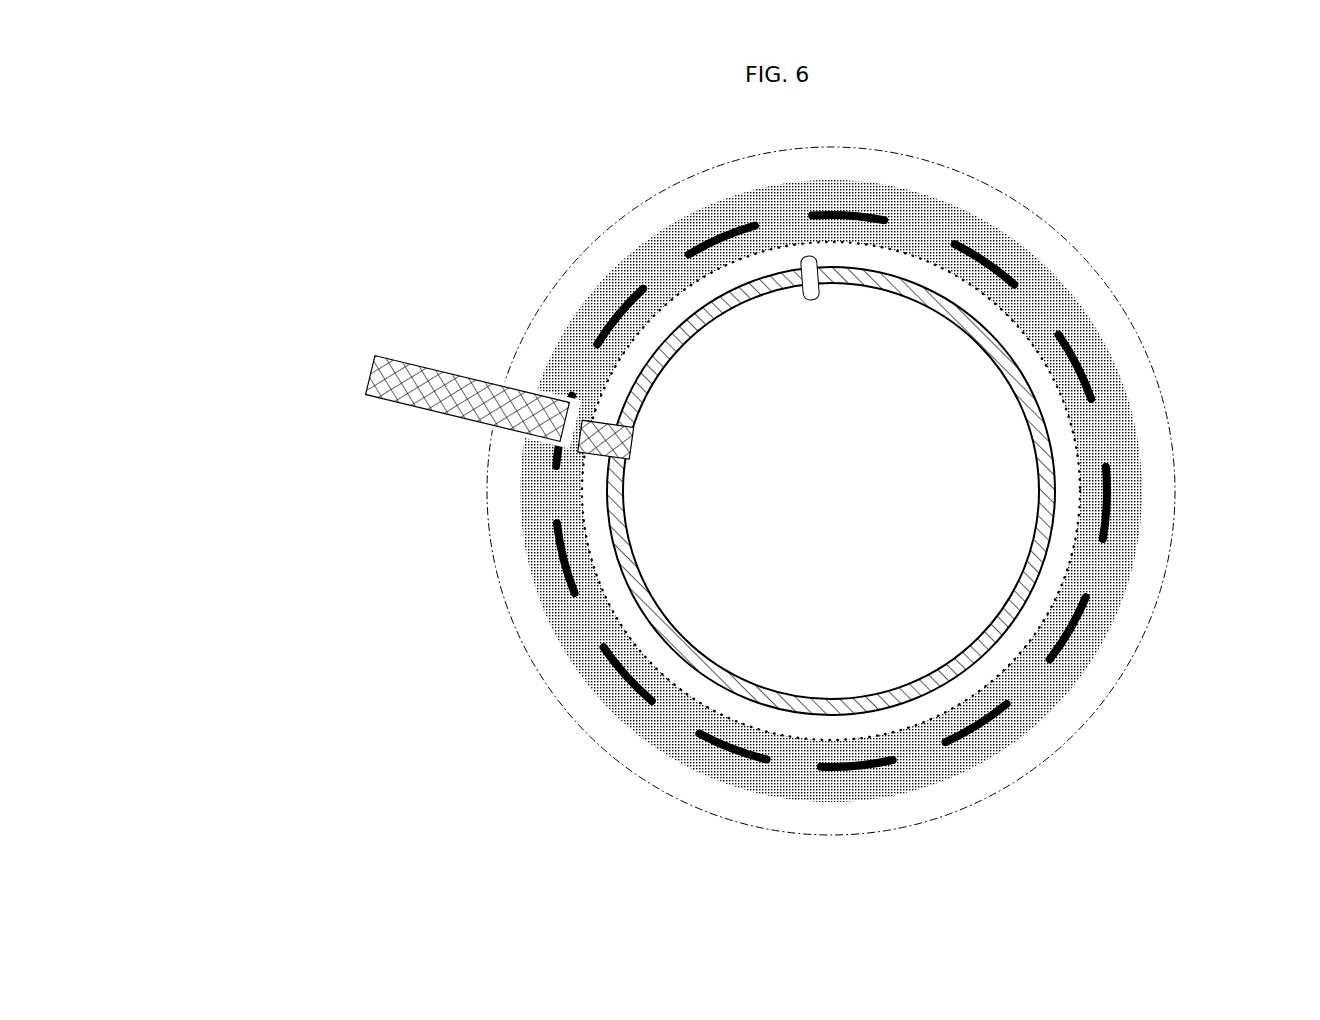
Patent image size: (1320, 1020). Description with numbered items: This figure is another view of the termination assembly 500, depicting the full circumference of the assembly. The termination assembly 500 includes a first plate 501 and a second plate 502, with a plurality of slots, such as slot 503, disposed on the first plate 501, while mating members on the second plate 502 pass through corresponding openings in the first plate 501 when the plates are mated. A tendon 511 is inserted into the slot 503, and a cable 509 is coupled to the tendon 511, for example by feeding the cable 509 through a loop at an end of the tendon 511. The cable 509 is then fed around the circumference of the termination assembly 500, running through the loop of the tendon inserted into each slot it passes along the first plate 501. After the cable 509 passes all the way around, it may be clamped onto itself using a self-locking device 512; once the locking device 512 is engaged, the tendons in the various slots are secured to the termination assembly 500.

The termination assembly 500 is at (192, 152).
The first plate 501 is at (618, 261).
The second plate 502 is at (556, 286).
The slot 503 is at (549, 474).
The cable 509 is at (1060, 447).
The tendon 511 is at (443, 415).
The self-locking device 512 is at (814, 257).